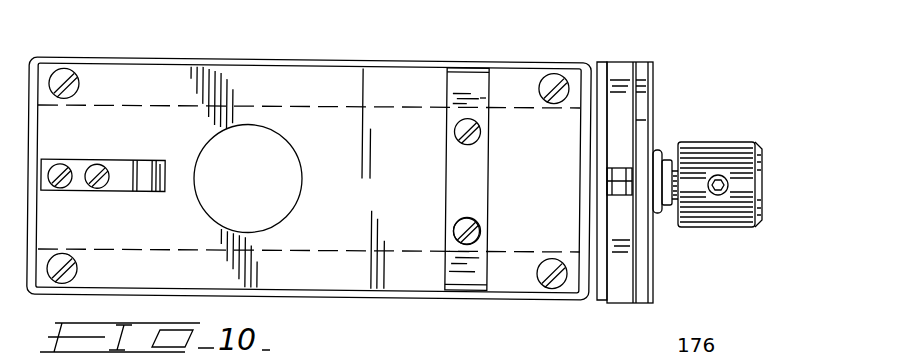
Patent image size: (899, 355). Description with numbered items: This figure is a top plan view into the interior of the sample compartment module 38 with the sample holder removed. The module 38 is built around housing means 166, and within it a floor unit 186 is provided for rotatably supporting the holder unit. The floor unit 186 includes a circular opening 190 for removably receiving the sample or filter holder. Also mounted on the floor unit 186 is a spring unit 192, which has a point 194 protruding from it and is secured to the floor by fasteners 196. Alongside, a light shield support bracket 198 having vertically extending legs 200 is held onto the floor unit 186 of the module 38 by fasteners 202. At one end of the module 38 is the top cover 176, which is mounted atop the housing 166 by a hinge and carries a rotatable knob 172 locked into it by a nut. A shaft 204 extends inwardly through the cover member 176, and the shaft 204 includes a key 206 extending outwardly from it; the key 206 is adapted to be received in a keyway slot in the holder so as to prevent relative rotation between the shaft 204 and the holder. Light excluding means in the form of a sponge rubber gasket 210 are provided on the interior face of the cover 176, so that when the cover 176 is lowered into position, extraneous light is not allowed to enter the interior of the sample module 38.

The sample compartment module 38 is at (580, 50).
The housing means 166 is at (338, 295).
The rotatable knob 172 is at (730, 148).
The top cover 176 is at (648, 140).
The floor unit 186 is at (397, 123).
The circular opening 190 is at (232, 128).
The spring unit 192 is at (125, 175).
The point 194 is at (163, 172).
The fasteners 196 is at (72, 180).
The light shield support bracket 198 is at (483, 100).
The vertically extending legs 200 is at (472, 72).
The fasteners 202 is at (479, 232).
The shaft 204 is at (607, 168).
The key 206 is at (618, 197).
The sponge rubber gasket 210 is at (638, 82).